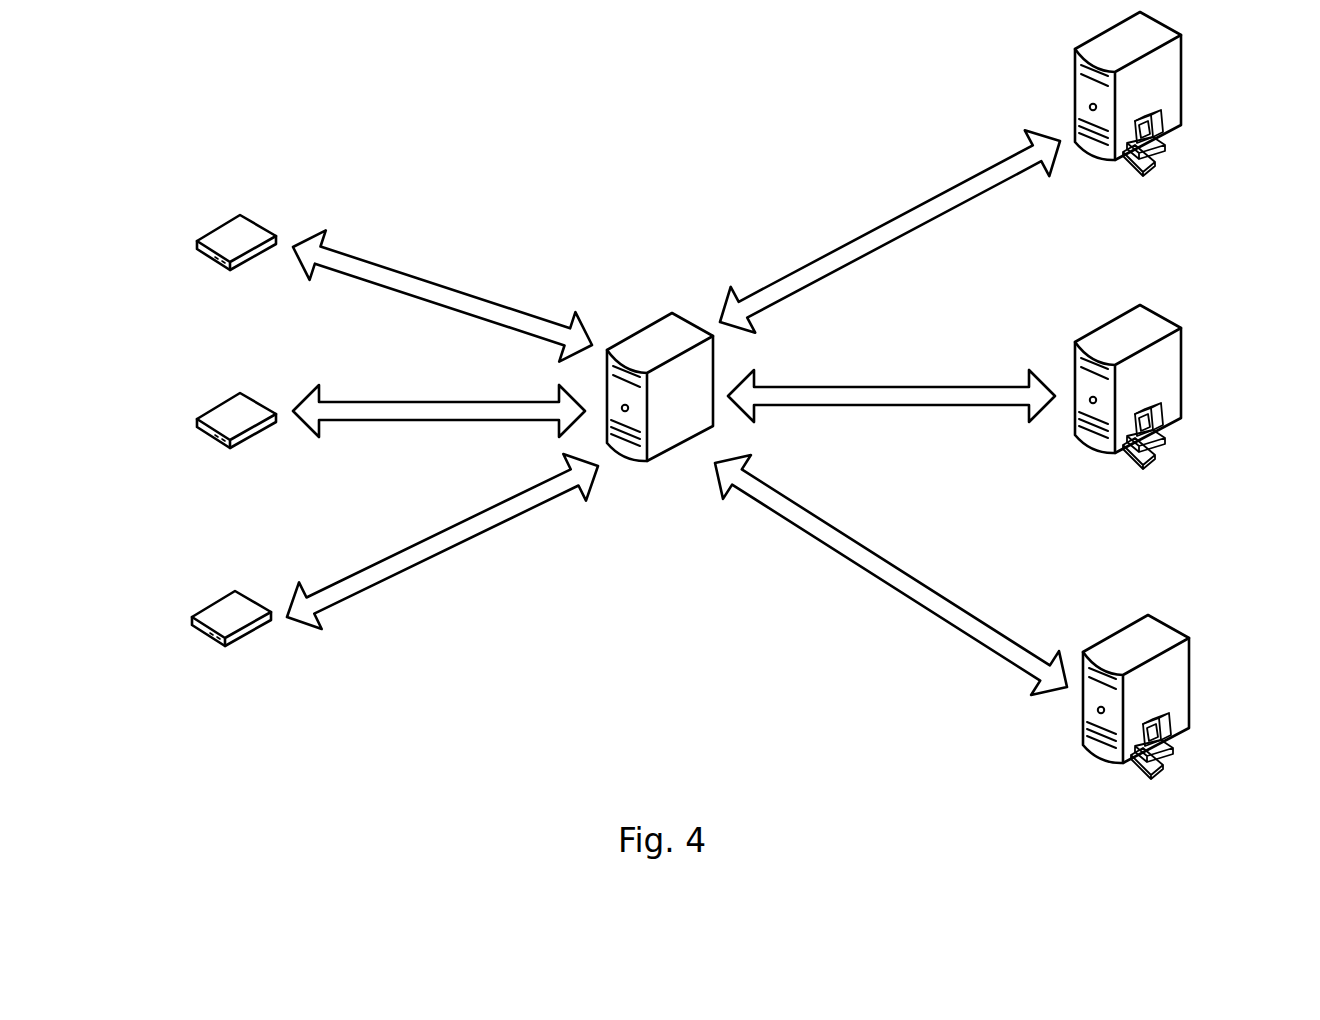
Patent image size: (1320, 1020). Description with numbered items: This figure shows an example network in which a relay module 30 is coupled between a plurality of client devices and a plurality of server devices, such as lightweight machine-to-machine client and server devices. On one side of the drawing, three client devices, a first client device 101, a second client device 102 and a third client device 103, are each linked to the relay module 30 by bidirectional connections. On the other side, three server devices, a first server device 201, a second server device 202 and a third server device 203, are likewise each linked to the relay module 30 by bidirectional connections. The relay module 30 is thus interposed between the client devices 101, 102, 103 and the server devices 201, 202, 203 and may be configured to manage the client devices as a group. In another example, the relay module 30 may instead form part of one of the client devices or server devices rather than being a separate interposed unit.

The client device 101 is at (215, 233).
The client device 102 is at (215, 411).
The client device 103 is at (210, 610).
The server device 201 is at (1181, 75).
The server device 202 is at (1181, 371).
The server device 203 is at (1188, 672).
The relay module 30 is at (655, 316).